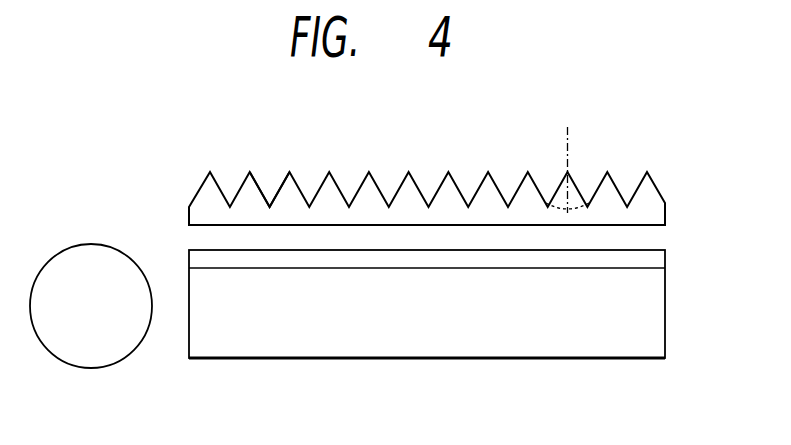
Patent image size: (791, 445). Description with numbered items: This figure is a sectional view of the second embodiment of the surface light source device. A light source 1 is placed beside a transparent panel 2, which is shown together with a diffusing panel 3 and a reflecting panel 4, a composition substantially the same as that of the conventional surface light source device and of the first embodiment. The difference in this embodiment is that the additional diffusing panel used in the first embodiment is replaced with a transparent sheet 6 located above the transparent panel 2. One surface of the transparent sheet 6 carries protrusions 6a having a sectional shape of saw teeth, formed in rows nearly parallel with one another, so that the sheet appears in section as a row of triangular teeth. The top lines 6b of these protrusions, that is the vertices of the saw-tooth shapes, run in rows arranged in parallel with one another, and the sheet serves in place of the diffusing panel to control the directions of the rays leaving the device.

The light source 1 is at (63, 352).
The transparent panel 2 is at (623, 343).
The diffusing panel 3 is at (635, 262).
The reflecting panel 4 is at (438, 358).
The transparent sheet 6 is at (370, 210).
The protrusions 6a is at (258, 180).
The top lines of the protrusions 6b is at (198, 226).